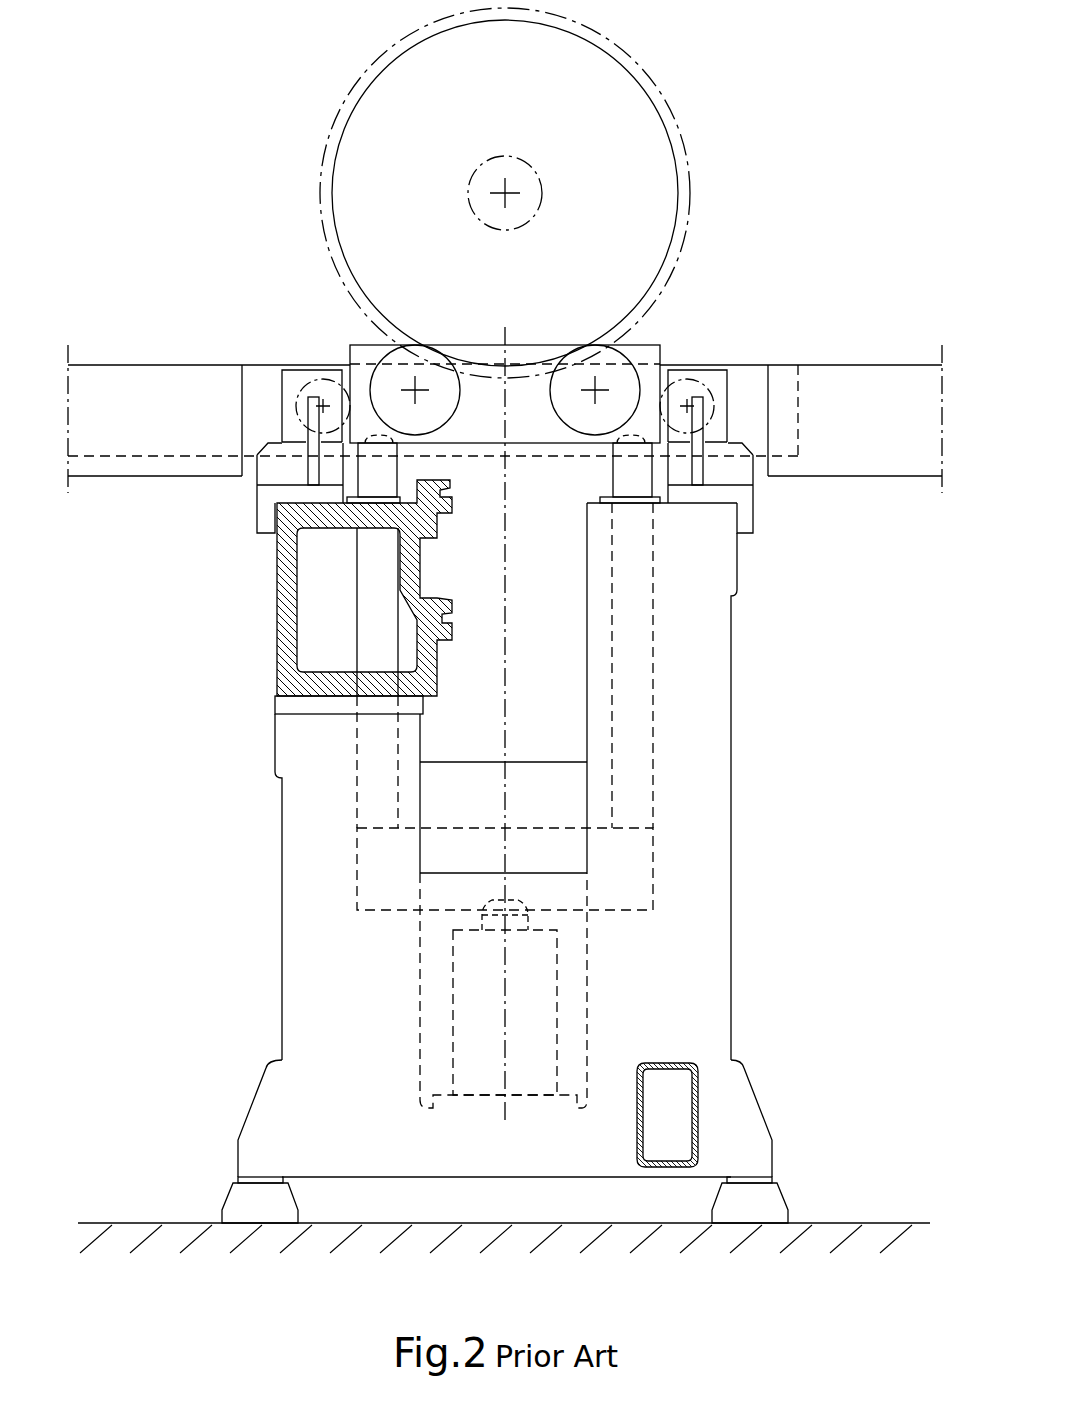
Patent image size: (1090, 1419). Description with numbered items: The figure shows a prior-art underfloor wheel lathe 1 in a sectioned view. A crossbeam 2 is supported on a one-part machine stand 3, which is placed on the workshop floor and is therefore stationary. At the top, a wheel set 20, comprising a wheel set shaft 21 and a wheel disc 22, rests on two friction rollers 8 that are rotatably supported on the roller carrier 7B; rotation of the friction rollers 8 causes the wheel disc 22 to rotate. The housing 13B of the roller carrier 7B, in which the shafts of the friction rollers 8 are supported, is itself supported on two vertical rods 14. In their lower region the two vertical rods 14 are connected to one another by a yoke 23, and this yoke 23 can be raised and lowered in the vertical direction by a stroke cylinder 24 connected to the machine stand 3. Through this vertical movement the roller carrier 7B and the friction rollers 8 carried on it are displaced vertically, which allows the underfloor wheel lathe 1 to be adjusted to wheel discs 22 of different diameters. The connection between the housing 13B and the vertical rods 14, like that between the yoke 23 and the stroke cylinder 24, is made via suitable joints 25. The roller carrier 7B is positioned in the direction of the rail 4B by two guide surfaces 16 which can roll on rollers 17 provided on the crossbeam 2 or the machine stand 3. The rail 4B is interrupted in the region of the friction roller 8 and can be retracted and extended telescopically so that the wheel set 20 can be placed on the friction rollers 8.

The underfloor wheel lathe 1 is at (803, 172).
The crossbeam 2 is at (290, 578).
The machine stand 3 is at (707, 568).
The rail 4B is at (156, 388).
The roller carrier 7B is at (537, 338).
The friction rollers 8 is at (568, 412).
The housing 13B is at (482, 355).
The vertical rods 14 is at (368, 634).
The guide surfaces 16 is at (345, 352).
The rollers 17 is at (308, 368).
The wheel set 20 is at (310, 135).
The wheel set shaft 21 is at (483, 185).
The wheel discs 22 is at (388, 111).
The yoke 23 is at (633, 871).
The stroke cylinder 24 is at (535, 1006).
The joints 25 is at (390, 447).